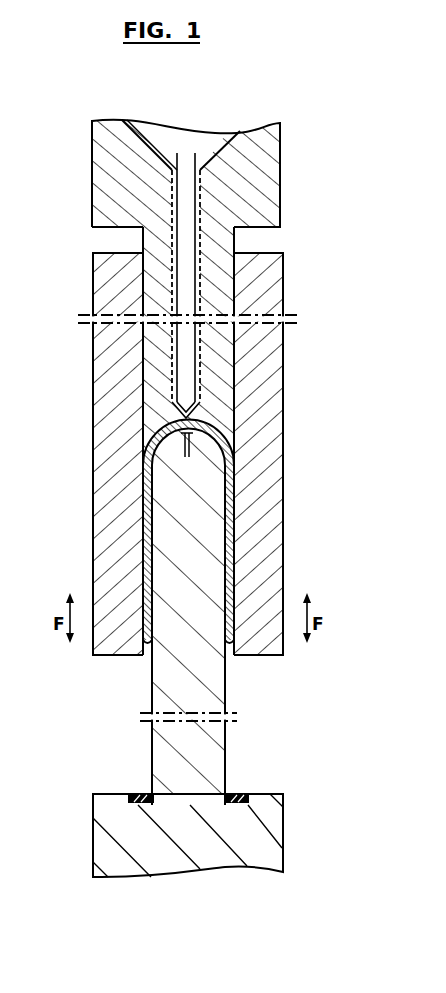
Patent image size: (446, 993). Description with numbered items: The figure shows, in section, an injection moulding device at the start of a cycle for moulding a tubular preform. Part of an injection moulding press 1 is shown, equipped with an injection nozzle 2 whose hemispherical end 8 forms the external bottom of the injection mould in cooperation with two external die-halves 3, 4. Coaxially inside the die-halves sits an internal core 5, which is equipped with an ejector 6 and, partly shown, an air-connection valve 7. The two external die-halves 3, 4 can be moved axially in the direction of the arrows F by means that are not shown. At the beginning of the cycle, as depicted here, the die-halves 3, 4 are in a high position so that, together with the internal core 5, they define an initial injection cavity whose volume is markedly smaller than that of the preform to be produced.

The injection moulding press 1 is at (270, 173).
The injection nozzle 2 is at (222, 362).
The external die-half 3 is at (103, 462).
The external die-half 4 is at (263, 478).
The internal core 5 is at (210, 544).
The ejector 6 is at (243, 791).
The air-connection valve 7 is at (233, 478).
The end of the injection nozzle 8 is at (236, 430).